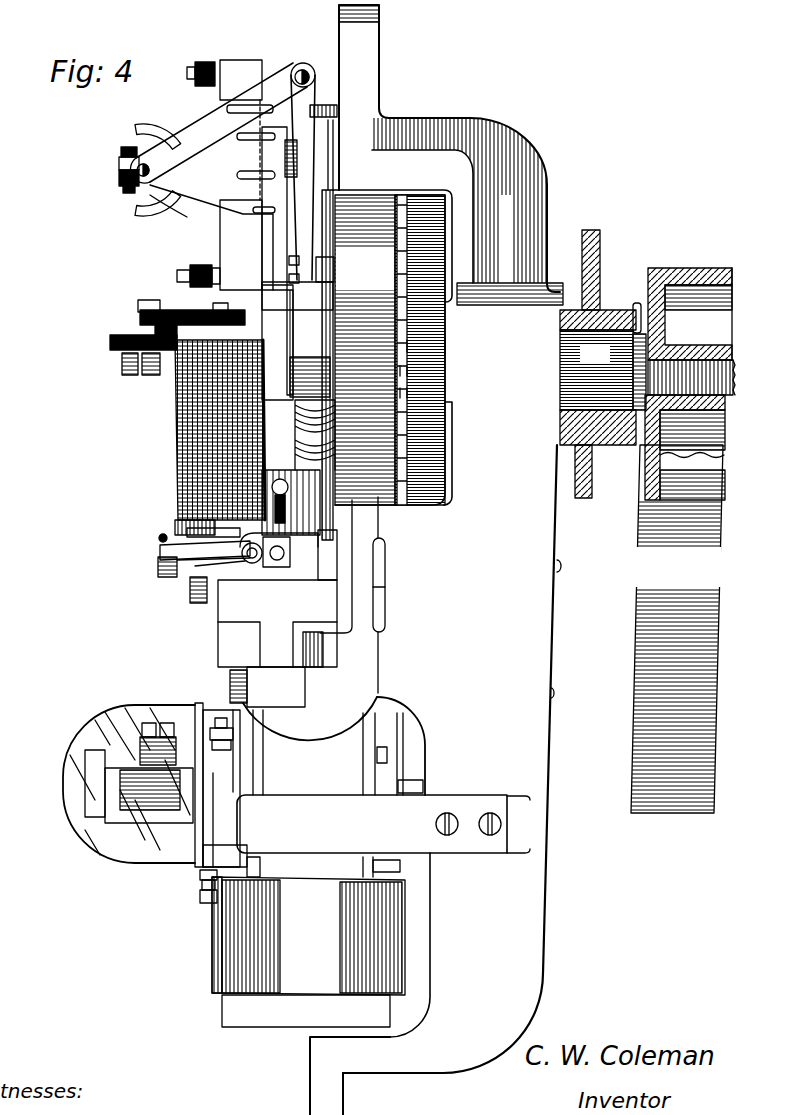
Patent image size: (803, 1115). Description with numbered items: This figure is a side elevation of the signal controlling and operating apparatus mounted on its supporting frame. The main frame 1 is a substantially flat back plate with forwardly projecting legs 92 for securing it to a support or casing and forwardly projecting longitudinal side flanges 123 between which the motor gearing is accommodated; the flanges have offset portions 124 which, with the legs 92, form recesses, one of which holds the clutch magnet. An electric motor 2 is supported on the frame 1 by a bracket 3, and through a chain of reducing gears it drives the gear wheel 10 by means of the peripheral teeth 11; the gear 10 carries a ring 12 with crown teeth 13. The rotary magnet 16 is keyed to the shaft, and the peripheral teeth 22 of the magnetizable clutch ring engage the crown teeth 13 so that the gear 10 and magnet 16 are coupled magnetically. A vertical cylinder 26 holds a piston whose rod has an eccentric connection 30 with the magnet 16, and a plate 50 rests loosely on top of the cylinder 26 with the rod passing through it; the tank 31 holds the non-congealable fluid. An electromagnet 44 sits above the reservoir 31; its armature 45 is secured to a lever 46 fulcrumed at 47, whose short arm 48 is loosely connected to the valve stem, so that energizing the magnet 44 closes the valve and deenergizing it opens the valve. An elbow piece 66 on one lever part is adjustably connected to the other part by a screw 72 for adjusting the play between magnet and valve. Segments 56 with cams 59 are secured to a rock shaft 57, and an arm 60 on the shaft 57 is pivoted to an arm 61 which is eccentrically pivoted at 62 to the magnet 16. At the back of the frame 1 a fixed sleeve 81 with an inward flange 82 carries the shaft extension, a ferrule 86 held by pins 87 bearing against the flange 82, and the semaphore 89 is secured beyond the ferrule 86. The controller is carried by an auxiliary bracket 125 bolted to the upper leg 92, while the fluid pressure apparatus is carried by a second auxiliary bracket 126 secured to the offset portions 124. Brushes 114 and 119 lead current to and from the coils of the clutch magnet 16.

The main frame 1 is at (441, 590).
The electric motor 2 is at (215, 918).
The bracket 3 is at (383, 824).
The gear wheel 10 is at (437, 312).
The peripheral teeth 11 is at (440, 345).
The ring 12 is at (402, 370).
The crown teeth 13 is at (405, 392).
The rotary magnet 16 is at (365, 350).
The peripheral teeth 22 is at (408, 425).
The vertical cylinder 26 is at (285, 518).
The eccentric connection 30 is at (298, 377).
The tank 31 is at (277, 643).
The electromagnet 44 is at (175, 452).
The armature 45 is at (195, 563).
The lever 46 is at (200, 557).
The fulcrum 47 is at (250, 556).
The short arm 48 is at (287, 491).
The plate 50 is at (297, 480).
The segments 56 is at (149, 208).
The rock shaft 57 is at (128, 192).
The cams 59 is at (180, 200).
The arm 60 is at (218, 176).
The arm 61 is at (302, 228).
The eccentric pivot 62 is at (323, 258).
The elbow piece 66 is at (175, 552).
The screw 72 is at (160, 540).
The sleeve 81 is at (614, 435).
The flange 82 is at (658, 318).
The ferrule 86 is at (603, 374).
The pins 87 is at (663, 337).
The semaphore 89 is at (655, 565).
The legs 92 is at (360, 58).
The brush 114 is at (289, 259).
The brush 119 is at (289, 280).
The side flanges 123 is at (433, 917).
The offset portions 124 is at (386, 600).
The auxiliary bracket 125 is at (277, 123).
The auxiliary bracket 126 is at (365, 657).